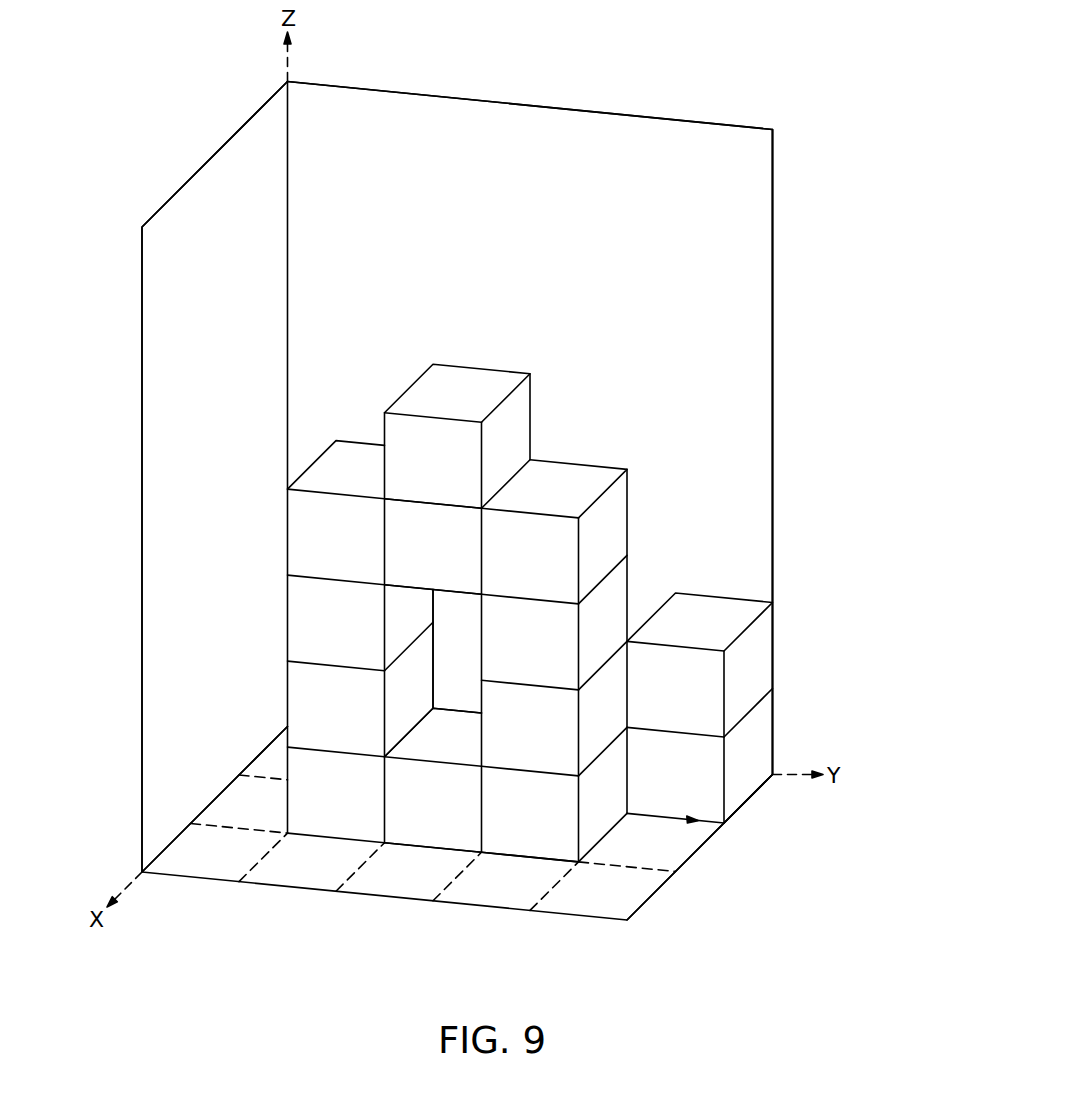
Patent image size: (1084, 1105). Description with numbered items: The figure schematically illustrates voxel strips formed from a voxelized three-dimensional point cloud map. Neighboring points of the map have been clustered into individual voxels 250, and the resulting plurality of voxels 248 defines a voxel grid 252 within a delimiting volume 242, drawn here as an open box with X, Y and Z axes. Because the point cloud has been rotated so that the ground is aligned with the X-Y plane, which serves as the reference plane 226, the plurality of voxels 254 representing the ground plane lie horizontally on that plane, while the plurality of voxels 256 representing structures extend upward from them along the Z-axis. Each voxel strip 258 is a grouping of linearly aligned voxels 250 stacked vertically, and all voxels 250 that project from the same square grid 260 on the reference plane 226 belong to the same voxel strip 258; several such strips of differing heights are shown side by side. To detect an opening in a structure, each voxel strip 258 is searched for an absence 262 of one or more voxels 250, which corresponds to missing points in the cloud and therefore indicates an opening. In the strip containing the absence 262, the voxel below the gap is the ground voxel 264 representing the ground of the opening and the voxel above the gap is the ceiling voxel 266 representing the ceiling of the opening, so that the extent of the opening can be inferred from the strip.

The reference plane 226 is at (700, 853).
The delimiting volume 242 is at (505, 477).
The plurality of voxels 248 is at (575, 240).
The voxel 250 is at (530, 375).
The voxel grid 252 is at (186, 477).
The plurality of voxels representing the ground plane 254 is at (771, 525).
The plurality of voxels representing structures 256 is at (580, 428).
The voxel strip 258 is at (548, 400).
The grid 260 is at (523, 858).
The absence of voxels 262 is at (433, 647).
The ground voxel 264 is at (427, 817).
The ceiling voxel 266 is at (413, 537).